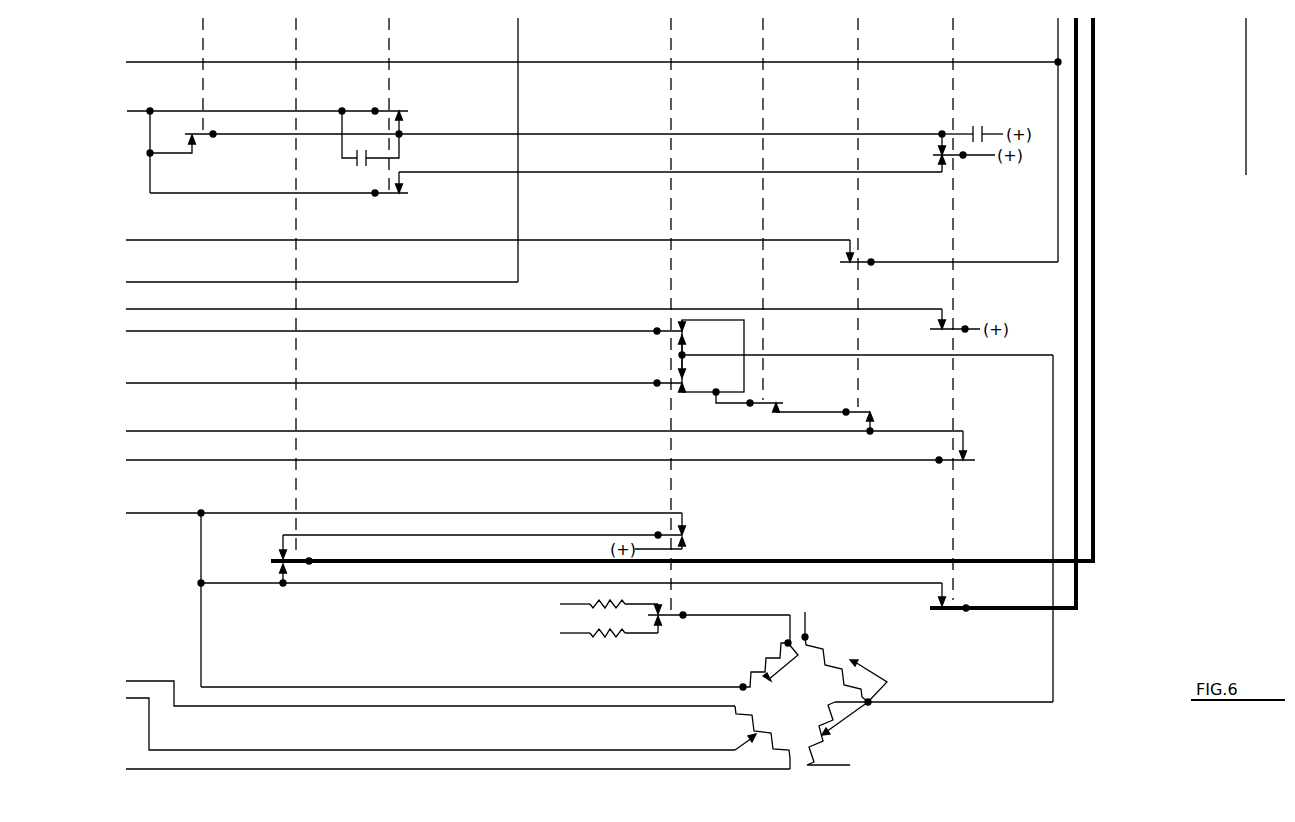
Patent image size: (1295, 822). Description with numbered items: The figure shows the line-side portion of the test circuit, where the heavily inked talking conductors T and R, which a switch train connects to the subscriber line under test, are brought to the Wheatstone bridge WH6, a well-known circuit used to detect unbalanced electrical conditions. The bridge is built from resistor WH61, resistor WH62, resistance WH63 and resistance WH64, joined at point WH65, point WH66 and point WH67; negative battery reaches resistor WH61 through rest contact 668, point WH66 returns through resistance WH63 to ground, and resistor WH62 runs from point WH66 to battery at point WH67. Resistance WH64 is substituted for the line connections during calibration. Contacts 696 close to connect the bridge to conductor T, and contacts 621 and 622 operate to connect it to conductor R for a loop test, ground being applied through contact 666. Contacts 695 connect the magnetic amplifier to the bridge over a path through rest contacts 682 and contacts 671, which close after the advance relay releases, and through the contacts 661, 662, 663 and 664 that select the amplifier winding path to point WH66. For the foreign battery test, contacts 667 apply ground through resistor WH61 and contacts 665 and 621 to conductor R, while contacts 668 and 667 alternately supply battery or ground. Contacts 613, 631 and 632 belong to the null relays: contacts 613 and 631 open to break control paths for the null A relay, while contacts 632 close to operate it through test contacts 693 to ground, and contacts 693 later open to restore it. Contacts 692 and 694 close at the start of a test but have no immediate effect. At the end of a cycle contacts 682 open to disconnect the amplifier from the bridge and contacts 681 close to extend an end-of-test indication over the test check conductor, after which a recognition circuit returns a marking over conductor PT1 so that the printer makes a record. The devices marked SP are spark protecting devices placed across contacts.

The contacts 613 is at (194, 140).
The contacts 631 is at (403, 113).
The contacts 632 is at (403, 186).
The contacts 661 is at (689, 326).
The rest contacts 662 is at (688, 340).
The contacts 663 is at (688, 372).
The rest contacts 664 is at (688, 390).
The contacts 665 is at (692, 525).
The contact 666 is at (688, 541).
The contacts 667 is at (666, 609).
The rest contact 668 is at (663, 621).
The contacts 671 is at (773, 410).
The contacts 681 is at (848, 262).
The rest contacts 682 is at (875, 412).
The contacts 692 is at (939, 152).
The test contacts 693 is at (939, 160).
The contacts 694 is at (937, 328).
The contacts 695 is at (967, 460).
The contacts 696 is at (935, 603).
The contacts 621 is at (279, 556).
The contacts 622 is at (278, 567).
The spark protecting device SP is at (979, 120).
The conductor PT1 is at (1246, 116).
The tip conductor T is at (1074, 313).
The ring conductor R is at (1094, 313).
The Wheatstone bridge WH6 is at (805, 711).
The resistor WH61 is at (760, 660).
The resistor WH62 is at (830, 657).
The resistance WH63 is at (855, 722).
The resistance WH64 is at (746, 725).
The point WH65 is at (742, 686).
The point WH66 is at (870, 701).
The point WH67 is at (807, 636).